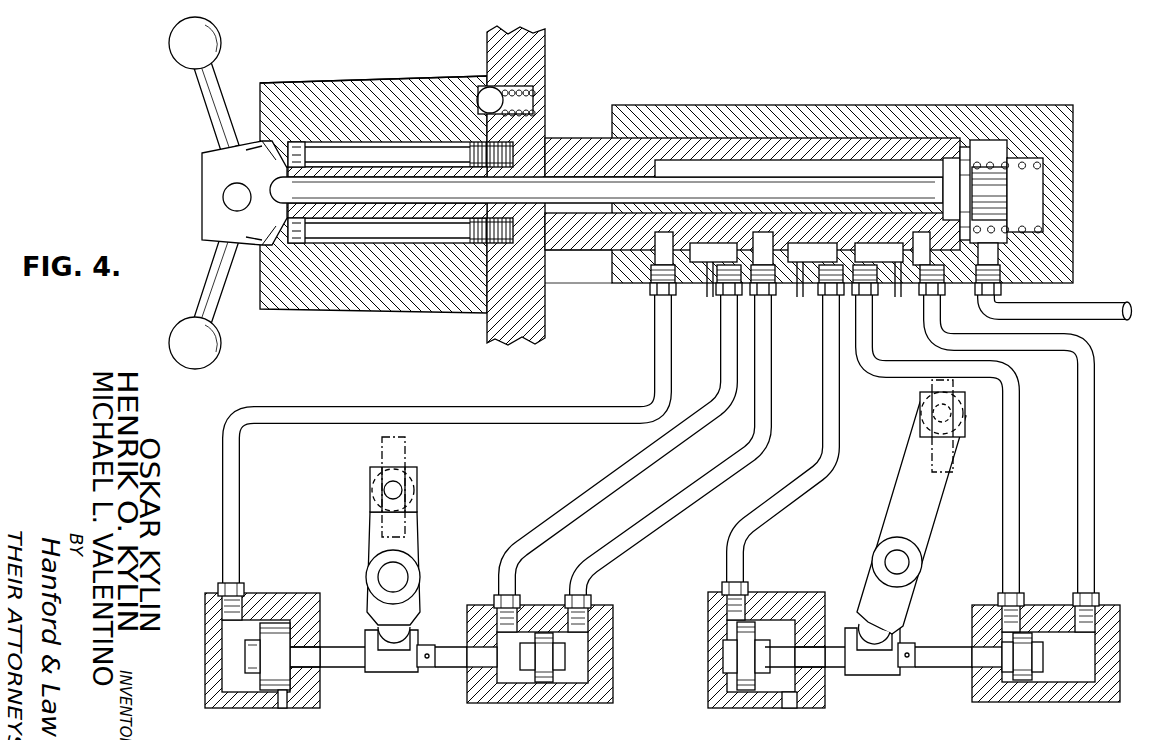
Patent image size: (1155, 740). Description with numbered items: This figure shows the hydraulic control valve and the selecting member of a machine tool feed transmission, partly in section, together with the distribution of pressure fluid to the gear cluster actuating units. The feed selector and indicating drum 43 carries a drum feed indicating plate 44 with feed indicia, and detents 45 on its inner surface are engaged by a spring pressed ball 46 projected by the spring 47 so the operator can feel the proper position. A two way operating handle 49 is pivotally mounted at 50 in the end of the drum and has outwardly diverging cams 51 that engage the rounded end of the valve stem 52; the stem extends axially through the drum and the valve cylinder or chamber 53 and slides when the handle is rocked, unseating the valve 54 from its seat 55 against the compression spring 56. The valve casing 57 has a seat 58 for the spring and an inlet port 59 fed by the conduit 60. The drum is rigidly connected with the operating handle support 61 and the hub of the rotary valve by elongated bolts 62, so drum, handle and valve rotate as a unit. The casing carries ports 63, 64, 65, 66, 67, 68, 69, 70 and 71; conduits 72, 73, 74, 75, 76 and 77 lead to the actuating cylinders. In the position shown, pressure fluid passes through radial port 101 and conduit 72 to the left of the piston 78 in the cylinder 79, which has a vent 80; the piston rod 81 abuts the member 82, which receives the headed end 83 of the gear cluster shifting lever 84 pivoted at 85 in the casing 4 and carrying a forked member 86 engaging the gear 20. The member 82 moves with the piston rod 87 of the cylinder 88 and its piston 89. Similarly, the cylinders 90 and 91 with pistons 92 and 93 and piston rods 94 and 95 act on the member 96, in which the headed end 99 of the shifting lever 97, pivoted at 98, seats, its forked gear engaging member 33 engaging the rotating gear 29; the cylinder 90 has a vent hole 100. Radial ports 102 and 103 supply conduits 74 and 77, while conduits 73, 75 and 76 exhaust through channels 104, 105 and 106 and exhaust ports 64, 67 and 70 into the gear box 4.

The casing 4 is at (546, 284).
The gear 20 is at (406, 441).
The rotating gear 29 is at (930, 393).
The forked gear engaging member 33 is at (965, 406).
The feed selector and indicating drum 43 is at (270, 83).
The drum feed indicating plate 44 is at (425, 78).
The detents 45 is at (478, 96).
The spring pressed ball 46 is at (530, 75).
The spring 47 is at (534, 100).
The two way operating handle 49 is at (215, 131).
The pivot 50 is at (230, 195).
The outwardly diverging cams 51 is at (252, 143).
The valve stem 52 is at (560, 165).
The valve cylinder or chamber 53 is at (740, 165).
The valve 54 is at (990, 168).
The valve seat 55 is at (965, 150).
The compression spring 56 is at (990, 142).
The valve casing 57 is at (852, 120).
The spring seat 58 is at (1035, 190).
The inlet port 59 is at (1002, 288).
The conduit 60 is at (1062, 313).
The operating handle support 61 is at (302, 150).
The elongated bolts 62 is at (295, 235).
The port 63 is at (650, 290).
The exhaust port 64 is at (716, 290).
The port 65 is at (710, 297).
The port 66 is at (776, 292).
The exhaust port 67 is at (802, 297).
The port 68 is at (838, 295).
The port 69 is at (878, 292).
The exhaust port 70 is at (900, 292).
The port 71 is at (945, 292).
The conduit 72 is at (672, 352).
The conduit 73 is at (721, 373).
The conduit 74 is at (768, 352).
The conduit 75 is at (822, 358).
The conduit 76 is at (868, 353).
The conduit 77 is at (930, 343).
The piston 78 is at (262, 700).
The cylinder 79 is at (230, 646).
The vent 80 is at (283, 704).
The piston rod 81 is at (334, 668).
The member 82 is at (390, 672).
The headed end 83 is at (402, 634).
The gear cluster shifting lever 84 is at (415, 551).
The pivot 85 is at (398, 578).
The forked member 86 is at (417, 471).
The piston rod 87 is at (449, 668).
The cylinder 88 is at (583, 648).
The piston 89 is at (541, 633).
The cylinder 90 is at (726, 690).
The cylinder 91 is at (1063, 690).
The piston 92 is at (752, 608).
The piston 93 is at (1022, 602).
The piston rod 94 is at (830, 668).
The piston rod 95 is at (941, 668).
The member 96 is at (876, 675).
The gear cluster shifting lever 97 is at (921, 533).
The pivot 98 is at (905, 568).
The headed end 99 is at (860, 628).
The vent hole 100 is at (790, 708).
The radial port 101 is at (665, 242).
The radial port 102 is at (763, 242).
The radial port 103 is at (921, 242).
The channel 104 is at (713, 252).
The channel 105 is at (812, 252).
The channel 106 is at (879, 252).